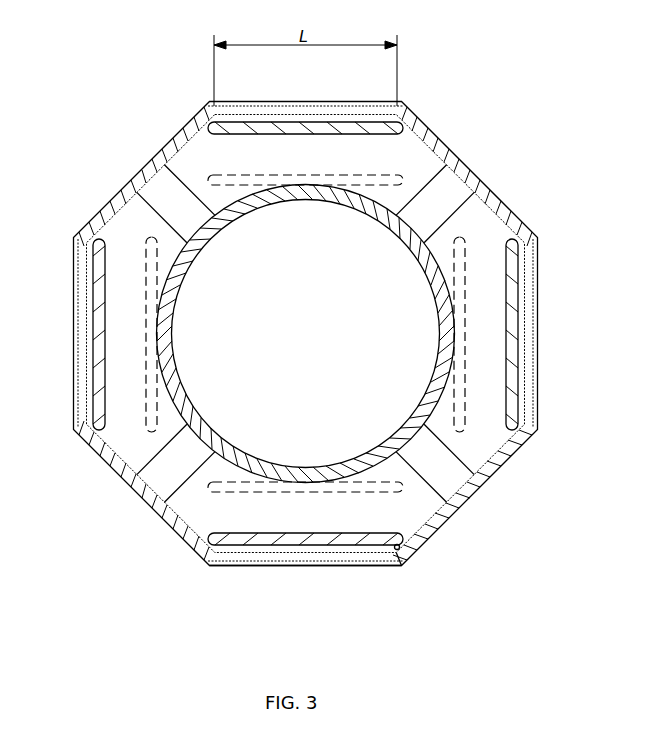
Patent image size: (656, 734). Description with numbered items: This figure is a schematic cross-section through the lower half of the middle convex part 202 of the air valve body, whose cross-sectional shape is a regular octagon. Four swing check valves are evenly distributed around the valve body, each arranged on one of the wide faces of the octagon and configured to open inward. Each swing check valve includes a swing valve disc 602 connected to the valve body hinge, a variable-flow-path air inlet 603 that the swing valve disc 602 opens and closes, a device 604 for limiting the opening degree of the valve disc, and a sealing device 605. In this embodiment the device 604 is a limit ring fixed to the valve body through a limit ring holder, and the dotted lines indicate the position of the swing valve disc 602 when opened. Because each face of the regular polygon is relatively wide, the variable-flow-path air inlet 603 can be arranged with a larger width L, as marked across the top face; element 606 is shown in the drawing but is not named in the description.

The middle convex part 202 is at (490, 178).
The swing valve disc 602 is at (344, 538).
The variable-flow-path air inlet 603 is at (330, 561).
The device for limiting the opening degree of the valve disc 604 is at (182, 415).
The sealing device 605 is at (399, 548).
The reinforcing rib 606 is at (176, 478).